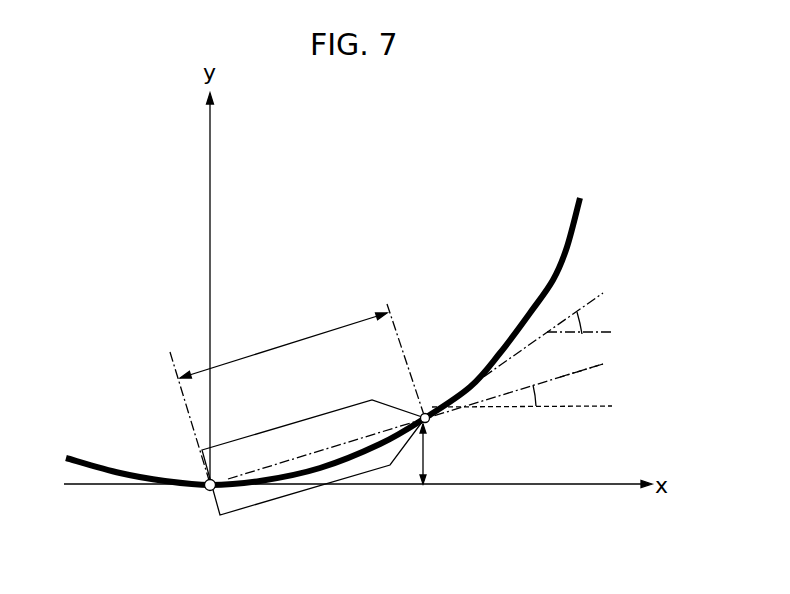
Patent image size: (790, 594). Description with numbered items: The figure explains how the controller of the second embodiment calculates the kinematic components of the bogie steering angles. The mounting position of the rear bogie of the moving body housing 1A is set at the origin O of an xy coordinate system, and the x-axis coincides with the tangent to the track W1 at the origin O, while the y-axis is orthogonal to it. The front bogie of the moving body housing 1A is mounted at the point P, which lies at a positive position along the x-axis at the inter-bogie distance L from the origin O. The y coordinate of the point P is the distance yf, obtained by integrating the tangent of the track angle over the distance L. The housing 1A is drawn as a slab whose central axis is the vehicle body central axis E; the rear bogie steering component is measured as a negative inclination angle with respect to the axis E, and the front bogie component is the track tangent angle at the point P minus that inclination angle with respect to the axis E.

The track W1 is at (529, 310).
The moving body housing 1A is at (273, 499).
The point P is at (425, 412).
The origin O is at (208, 491).
The inter-bogie distance L is at (283, 345).
The y coordinate value of the point P yf is at (436, 454).
The vehicle body central axis E is at (598, 367).